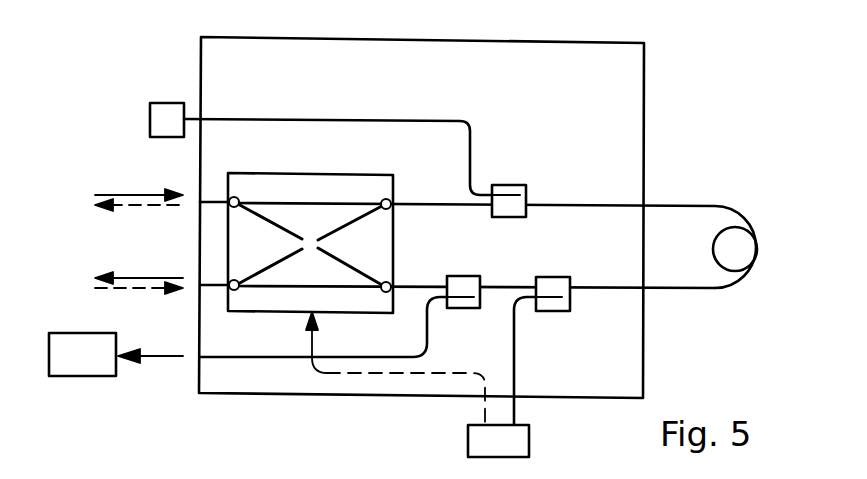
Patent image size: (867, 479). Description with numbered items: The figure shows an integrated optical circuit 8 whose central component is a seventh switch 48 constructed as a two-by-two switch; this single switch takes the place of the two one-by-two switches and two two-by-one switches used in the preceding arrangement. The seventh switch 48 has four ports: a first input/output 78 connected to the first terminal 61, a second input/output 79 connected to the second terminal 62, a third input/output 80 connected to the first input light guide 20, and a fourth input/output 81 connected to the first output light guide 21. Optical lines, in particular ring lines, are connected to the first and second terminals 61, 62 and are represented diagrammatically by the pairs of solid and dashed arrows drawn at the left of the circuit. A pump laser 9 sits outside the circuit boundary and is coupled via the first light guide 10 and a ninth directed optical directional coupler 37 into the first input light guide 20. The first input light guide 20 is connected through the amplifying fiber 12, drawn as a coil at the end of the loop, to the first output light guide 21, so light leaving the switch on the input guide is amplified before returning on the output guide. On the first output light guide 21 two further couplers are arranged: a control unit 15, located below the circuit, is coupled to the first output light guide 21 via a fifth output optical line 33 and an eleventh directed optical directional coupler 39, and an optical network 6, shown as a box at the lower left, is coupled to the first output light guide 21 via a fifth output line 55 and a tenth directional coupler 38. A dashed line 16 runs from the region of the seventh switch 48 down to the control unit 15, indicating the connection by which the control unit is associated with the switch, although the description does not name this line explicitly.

The integrated optical circuit 8 is at (648, 112).
The pump laser 9 is at (168, 112).
The first light guide 10 is at (375, 118).
The first terminal 61 is at (198, 200).
The second terminal 62 is at (198, 283).
The seventh switch 48 is at (272, 174).
The first input/output 78 is at (231, 197).
The second input/output 79 is at (229, 291).
The third input/output 80 is at (391, 200).
The fourth input/output 81 is at (391, 292).
The ninth directed optical directional coupler 37 is at (507, 185).
The tenth directional coupler 38 is at (465, 277).
The eleventh directed optical directional coupler 39 is at (553, 278).
The first input light guide 20 is at (592, 204).
The first output light guide 21 is at (592, 290).
The amplifying fiber 12 is at (713, 246).
The fifth output line 55 is at (277, 358).
The control signal line 16 is at (445, 372).
The fifth output optical line 33 is at (515, 365).
The control unit 15 is at (480, 435).
The optical network 6 is at (101, 377).